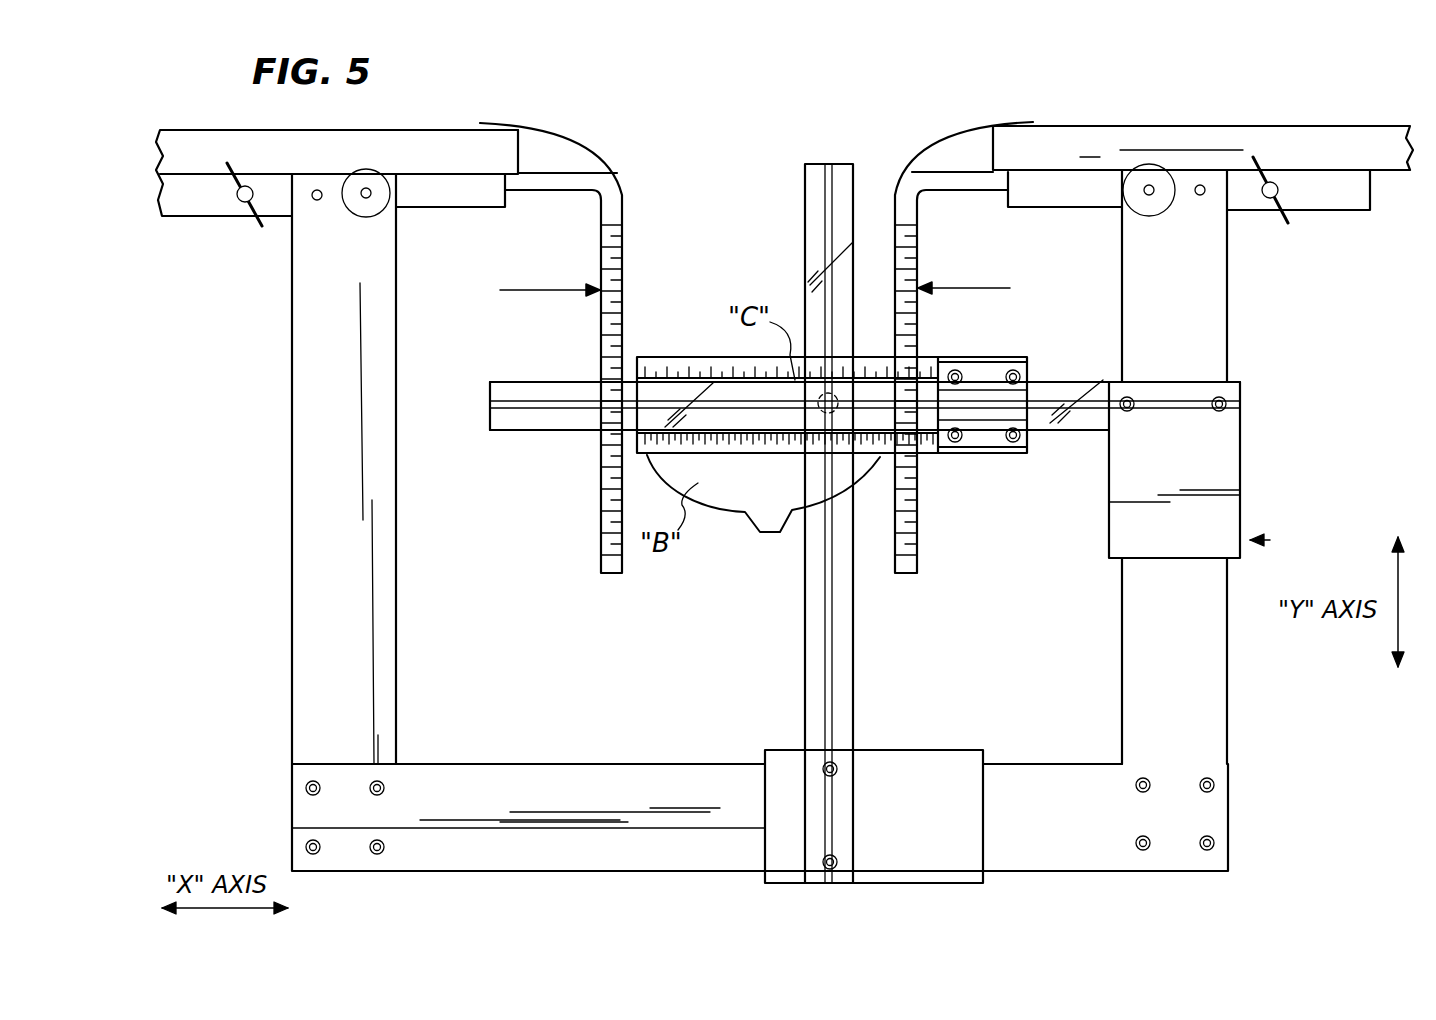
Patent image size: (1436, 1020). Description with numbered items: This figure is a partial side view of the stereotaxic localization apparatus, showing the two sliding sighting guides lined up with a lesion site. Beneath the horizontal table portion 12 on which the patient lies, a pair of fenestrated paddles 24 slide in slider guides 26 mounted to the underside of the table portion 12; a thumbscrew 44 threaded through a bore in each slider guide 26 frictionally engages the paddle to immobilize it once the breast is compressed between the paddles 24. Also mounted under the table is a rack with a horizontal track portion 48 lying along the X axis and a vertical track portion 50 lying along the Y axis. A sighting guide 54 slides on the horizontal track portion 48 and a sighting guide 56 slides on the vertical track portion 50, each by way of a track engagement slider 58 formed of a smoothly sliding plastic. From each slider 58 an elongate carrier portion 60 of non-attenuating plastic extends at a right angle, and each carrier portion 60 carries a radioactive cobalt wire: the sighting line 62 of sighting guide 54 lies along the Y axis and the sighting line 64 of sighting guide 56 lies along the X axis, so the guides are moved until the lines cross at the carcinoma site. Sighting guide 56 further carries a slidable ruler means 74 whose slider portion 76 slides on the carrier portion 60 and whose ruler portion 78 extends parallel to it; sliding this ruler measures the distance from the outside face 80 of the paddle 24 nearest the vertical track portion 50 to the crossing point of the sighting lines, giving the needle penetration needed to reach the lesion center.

The table portion 12 is at (1128, 133).
The fenestrated paddle 24 is at (917, 258).
The slider guide 26 is at (1340, 200).
The thumbscrew 44 is at (238, 205).
The horizontal track portion 48 is at (630, 858).
The vertical track portion 50 is at (1205, 655).
The sighting guide 54 is at (806, 884).
The sighting guide 56 is at (1272, 538).
The track engagement slider 58 is at (1218, 465).
The carrier portion 60 is at (578, 430).
The sighting line 62 is at (830, 588).
The sighting line 64 is at (545, 408).
The slidable ruler means 74 is at (988, 462).
The slider portion 76 is at (995, 375).
The ruler portion 78 is at (668, 357).
The outside face 80 is at (917, 535).